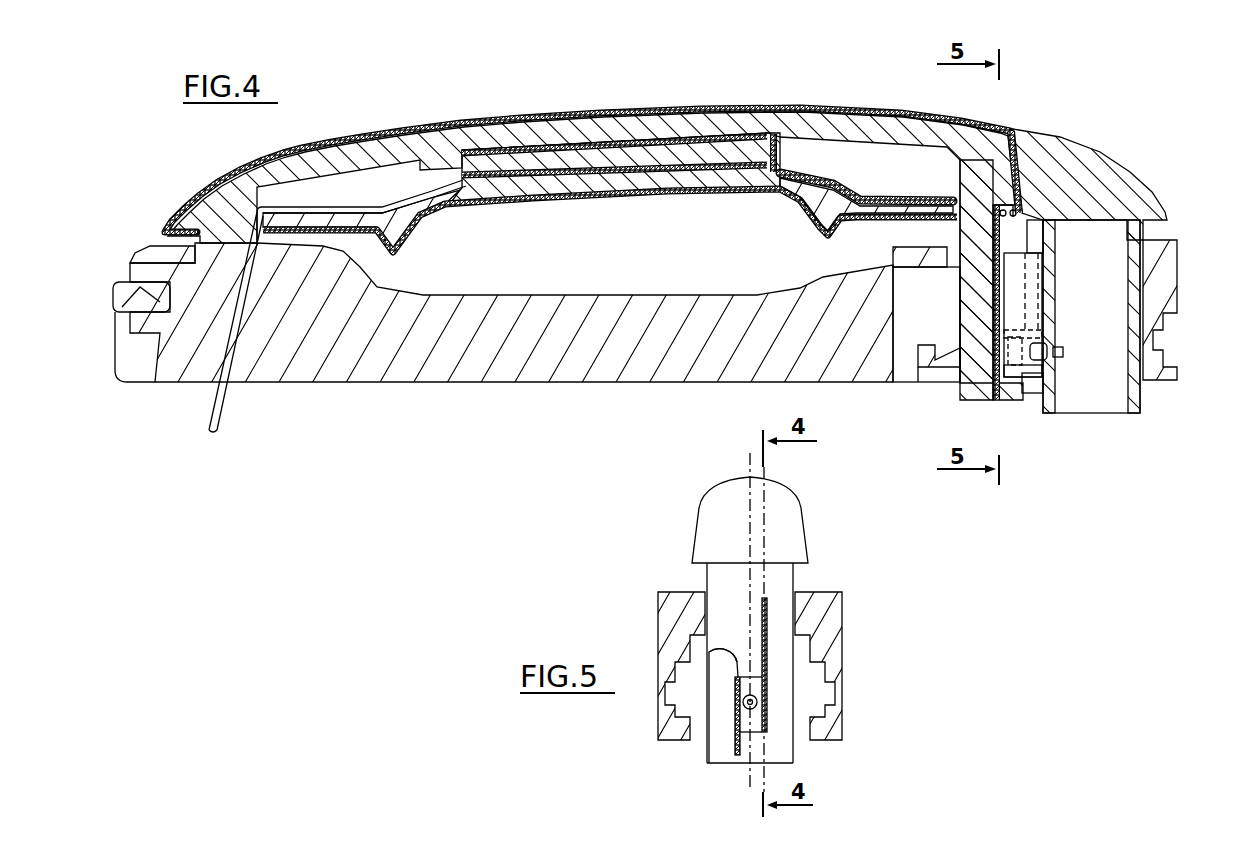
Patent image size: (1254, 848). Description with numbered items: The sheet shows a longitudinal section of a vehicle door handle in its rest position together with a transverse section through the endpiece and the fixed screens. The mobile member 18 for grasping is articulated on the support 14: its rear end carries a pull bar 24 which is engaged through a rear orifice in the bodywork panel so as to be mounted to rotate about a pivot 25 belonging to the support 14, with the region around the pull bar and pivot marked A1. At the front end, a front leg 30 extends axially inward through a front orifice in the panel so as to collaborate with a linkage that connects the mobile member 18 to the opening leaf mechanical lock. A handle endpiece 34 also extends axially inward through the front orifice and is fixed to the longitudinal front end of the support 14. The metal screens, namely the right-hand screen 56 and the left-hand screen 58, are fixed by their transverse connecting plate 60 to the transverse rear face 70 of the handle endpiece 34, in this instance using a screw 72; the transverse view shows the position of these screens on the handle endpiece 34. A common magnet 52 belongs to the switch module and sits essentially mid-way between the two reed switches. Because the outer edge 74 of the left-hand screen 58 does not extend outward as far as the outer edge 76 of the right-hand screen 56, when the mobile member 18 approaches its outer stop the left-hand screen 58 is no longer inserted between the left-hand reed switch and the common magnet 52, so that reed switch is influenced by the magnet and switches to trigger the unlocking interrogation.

In FIG. 4, the support 14 is at (496, 384).
In FIG. 5, the support 14 is at (852, 689).
In FIG. 4, the mobile member for grasping 18 is at (522, 106).
In FIG. 4, the pull bar 24 is at (145, 345).
In FIG. 4, the pivot 25 is at (127, 290).
In FIG. 4, the ring section A1 is at (125, 297).
In FIG. 4, the front leg 30 is at (955, 328).
In FIG. 4, the handle endpiece 34 is at (1141, 163).
In FIG. 5, the handle endpiece 34 is at (690, 545).
In FIG. 4, the common magnet 52 is at (1020, 342).
In FIG. 4, the right-hand screen 56 is at (1013, 290).
In FIG. 5, the right-hand screen 56 is at (767, 732).
In FIG. 4, the left-hand screen 58 is at (1028, 393).
In FIG. 5, the left-hand screen 58 is at (738, 755).
In FIG. 4, the transverse connecting plate 60 is at (1047, 370).
In FIG. 4, the transverse rear face 70 is at (1045, 215).
In FIG. 5, the transverse rear face 70 is at (720, 752).
In FIG. 4, the screw 72 is at (1057, 352).
In FIG. 5, the outer edge of the left-hand screen 74 is at (710, 652).
In FIG. 5, the outer edge of the right-hand screen 76 is at (766, 600).